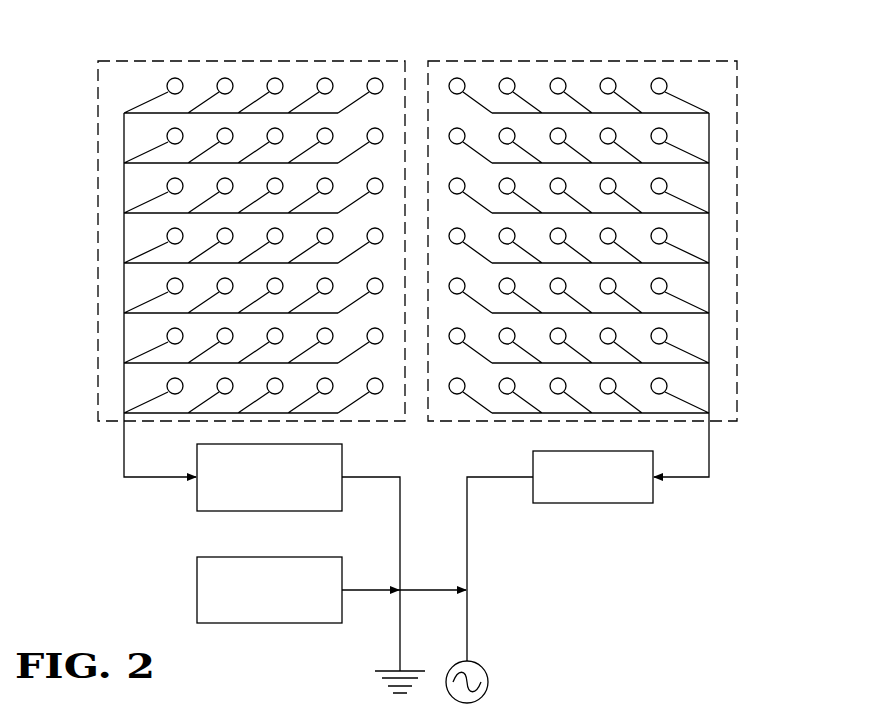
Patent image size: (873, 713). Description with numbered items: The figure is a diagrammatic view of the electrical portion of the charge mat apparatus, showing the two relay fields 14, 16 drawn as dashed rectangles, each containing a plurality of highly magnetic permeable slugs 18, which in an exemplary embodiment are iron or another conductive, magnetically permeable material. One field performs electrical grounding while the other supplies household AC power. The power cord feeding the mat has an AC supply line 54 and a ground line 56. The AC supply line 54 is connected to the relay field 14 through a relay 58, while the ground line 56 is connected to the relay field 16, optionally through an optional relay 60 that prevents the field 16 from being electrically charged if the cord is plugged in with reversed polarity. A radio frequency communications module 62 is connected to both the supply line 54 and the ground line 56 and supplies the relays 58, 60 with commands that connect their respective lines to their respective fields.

The relay field 14 is at (737, 162).
The relay field 16 is at (98, 160).
The highly magnetic permeable slugs 18 is at (372, 81).
The AC supply line 54 is at (467, 567).
The ground line 56 is at (398, 627).
The relay 58 is at (617, 503).
The optional relay 60 is at (197, 493).
The radio frequency communications module 62 is at (197, 575).